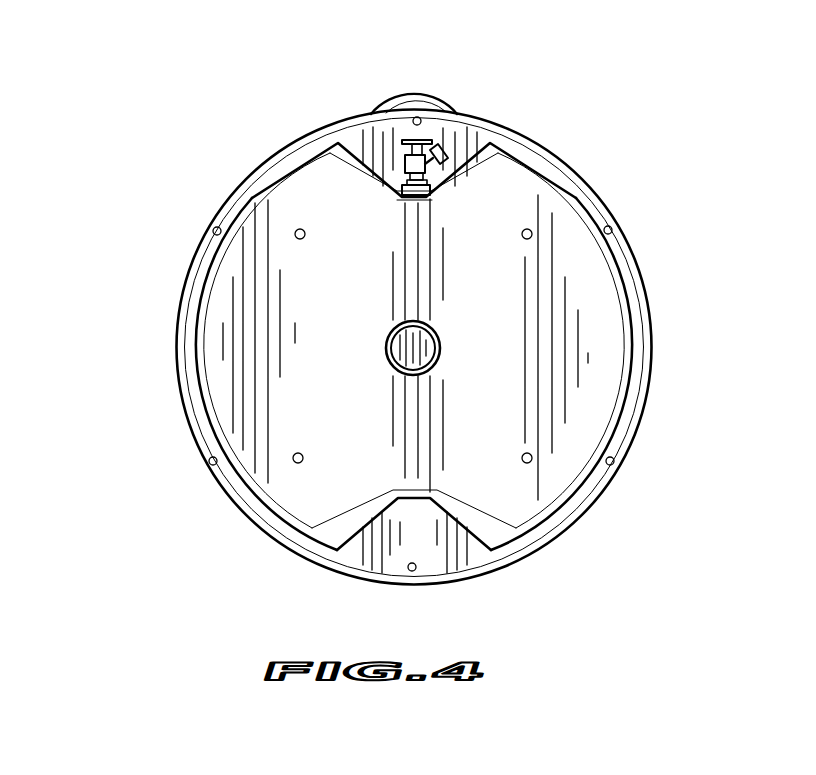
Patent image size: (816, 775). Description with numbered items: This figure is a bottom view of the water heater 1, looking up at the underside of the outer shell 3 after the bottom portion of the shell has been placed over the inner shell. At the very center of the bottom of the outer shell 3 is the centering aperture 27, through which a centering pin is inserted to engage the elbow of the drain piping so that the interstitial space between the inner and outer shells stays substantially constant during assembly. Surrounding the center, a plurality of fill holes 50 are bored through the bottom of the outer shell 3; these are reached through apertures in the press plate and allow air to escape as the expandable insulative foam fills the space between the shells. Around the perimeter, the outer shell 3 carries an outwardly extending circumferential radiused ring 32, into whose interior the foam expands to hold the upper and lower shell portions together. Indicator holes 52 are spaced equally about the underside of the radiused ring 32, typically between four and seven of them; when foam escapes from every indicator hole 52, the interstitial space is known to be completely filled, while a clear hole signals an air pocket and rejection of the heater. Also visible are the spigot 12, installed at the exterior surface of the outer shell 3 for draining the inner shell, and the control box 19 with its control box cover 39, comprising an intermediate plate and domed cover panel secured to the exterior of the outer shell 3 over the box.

The water heater 1 is at (211, 181).
The outer shell 3 is at (492, 366).
The spigot 12 is at (412, 140).
The control box 19 is at (453, 98).
The centering aperture 27 is at (390, 333).
The radiused ring 32 is at (653, 342).
The control box cover 39 is at (413, 93).
The fill holes 50 is at (299, 229).
The indicator holes 52 is at (213, 229).